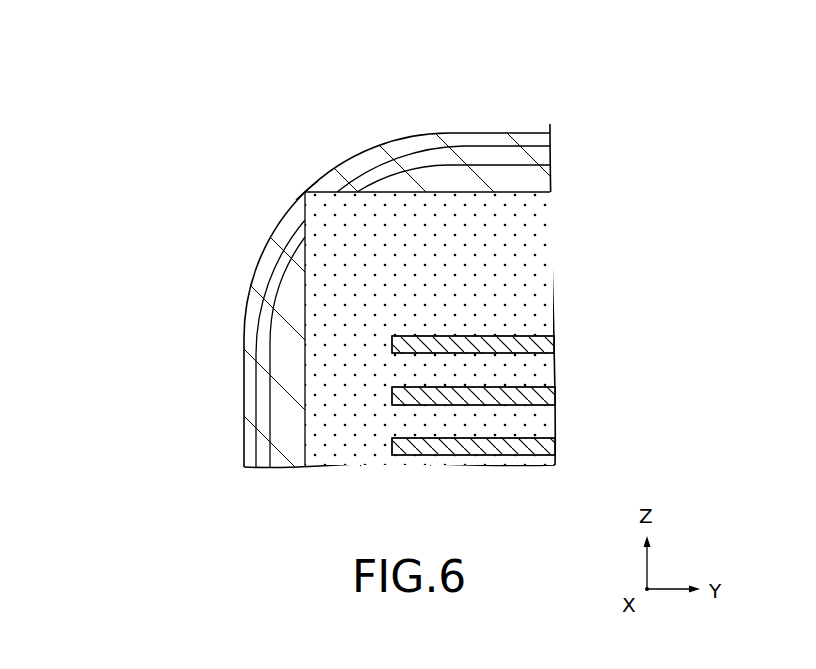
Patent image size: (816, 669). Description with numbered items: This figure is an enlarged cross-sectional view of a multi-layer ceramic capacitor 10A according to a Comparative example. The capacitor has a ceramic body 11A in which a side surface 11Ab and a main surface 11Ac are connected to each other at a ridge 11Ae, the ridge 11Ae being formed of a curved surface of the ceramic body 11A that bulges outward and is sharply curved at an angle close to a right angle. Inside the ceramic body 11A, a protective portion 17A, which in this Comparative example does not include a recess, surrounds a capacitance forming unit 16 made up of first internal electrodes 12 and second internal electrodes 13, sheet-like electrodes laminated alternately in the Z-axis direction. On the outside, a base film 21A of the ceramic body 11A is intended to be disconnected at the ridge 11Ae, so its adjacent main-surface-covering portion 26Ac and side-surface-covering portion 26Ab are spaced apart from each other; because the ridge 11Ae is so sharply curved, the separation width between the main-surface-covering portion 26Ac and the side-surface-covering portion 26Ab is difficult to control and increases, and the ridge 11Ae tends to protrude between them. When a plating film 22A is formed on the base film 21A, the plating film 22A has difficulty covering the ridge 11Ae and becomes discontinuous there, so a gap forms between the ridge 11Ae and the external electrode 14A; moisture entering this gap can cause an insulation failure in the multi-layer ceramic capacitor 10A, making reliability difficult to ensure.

The multi-layer ceramic capacitor 10A is at (280, 109).
The ceramic body 11A is at (566, 256).
The side surface 11Ab is at (303, 444).
The main surface 11Ac is at (519, 190).
The ridge 11Ae is at (305, 191).
The first internal electrodes 12 is at (556, 345).
The second internal electrodes 13 is at (556, 395).
The external electrode 14A is at (236, 348).
The capacitance forming unit 16 is at (494, 433).
The protective portion 17A is at (350, 280).
The base film 21A is at (308, 252).
The plating film 22A is at (255, 375).
The side-surface-covering portion 26Ab is at (290, 284).
The main-surface-covering portion 26Ac is at (394, 140).